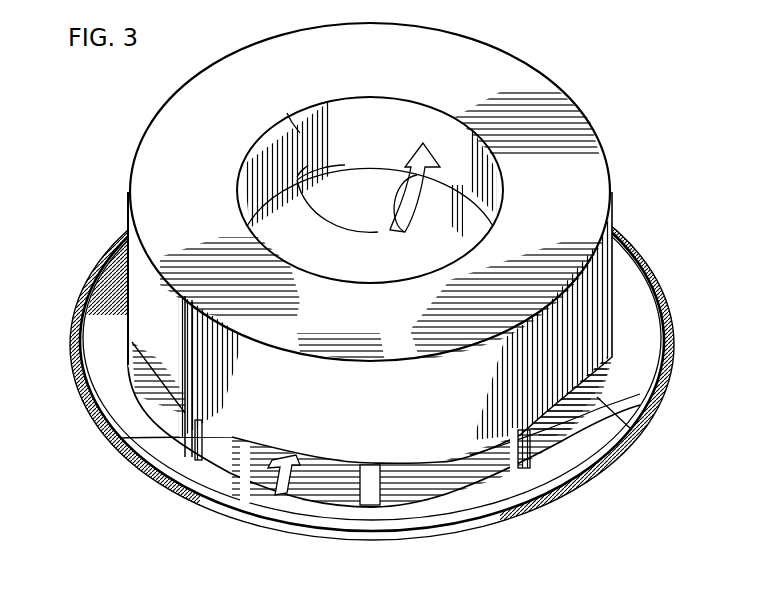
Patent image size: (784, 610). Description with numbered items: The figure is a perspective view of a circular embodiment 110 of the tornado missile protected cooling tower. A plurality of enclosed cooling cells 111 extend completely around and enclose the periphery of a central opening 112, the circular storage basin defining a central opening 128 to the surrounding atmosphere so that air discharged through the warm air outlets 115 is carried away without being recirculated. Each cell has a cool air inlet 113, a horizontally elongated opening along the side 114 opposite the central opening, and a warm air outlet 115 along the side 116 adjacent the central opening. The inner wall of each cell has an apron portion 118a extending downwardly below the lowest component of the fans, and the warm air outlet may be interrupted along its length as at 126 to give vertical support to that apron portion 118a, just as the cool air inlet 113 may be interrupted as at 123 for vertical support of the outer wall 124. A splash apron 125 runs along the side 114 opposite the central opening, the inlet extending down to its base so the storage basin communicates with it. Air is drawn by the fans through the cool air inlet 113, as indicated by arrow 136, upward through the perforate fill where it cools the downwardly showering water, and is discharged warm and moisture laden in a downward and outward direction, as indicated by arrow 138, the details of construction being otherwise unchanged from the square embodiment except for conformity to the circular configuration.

The circular embodiment of tornado missile protected cooling tower 110 is at (578, 76).
The cooling cells 111 is at (216, 62).
The central opening 112 is at (362, 274).
The bottom support portion 113 is at (330, 470).
The side wall section 114 is at (150, 362).
The warm air outlets 115 is at (330, 198).
The bore wall 116 is at (253, 163).
The bore wall surface 118a is at (306, 137).
The base flange rim 123 is at (128, 468).
The bottom annular section 124 is at (356, 432).
The flange inner step 125 is at (170, 475).
The inner groove 126 is at (307, 160).
The central opening 128 is at (347, 143).
The locking tab 136 is at (292, 462).
The direction arrow 138 is at (378, 233).